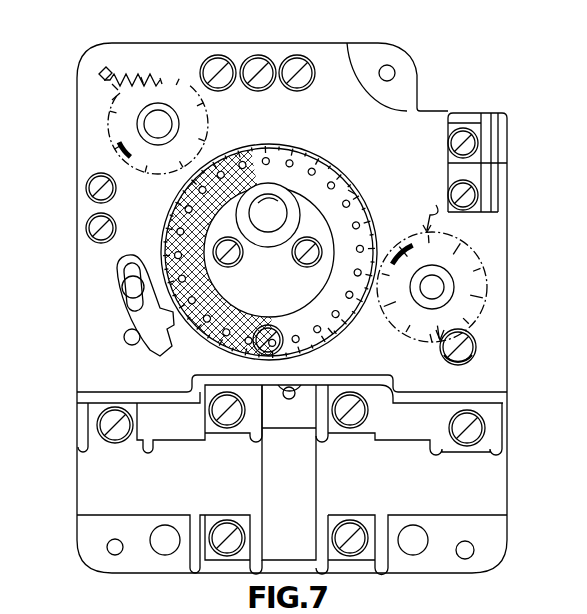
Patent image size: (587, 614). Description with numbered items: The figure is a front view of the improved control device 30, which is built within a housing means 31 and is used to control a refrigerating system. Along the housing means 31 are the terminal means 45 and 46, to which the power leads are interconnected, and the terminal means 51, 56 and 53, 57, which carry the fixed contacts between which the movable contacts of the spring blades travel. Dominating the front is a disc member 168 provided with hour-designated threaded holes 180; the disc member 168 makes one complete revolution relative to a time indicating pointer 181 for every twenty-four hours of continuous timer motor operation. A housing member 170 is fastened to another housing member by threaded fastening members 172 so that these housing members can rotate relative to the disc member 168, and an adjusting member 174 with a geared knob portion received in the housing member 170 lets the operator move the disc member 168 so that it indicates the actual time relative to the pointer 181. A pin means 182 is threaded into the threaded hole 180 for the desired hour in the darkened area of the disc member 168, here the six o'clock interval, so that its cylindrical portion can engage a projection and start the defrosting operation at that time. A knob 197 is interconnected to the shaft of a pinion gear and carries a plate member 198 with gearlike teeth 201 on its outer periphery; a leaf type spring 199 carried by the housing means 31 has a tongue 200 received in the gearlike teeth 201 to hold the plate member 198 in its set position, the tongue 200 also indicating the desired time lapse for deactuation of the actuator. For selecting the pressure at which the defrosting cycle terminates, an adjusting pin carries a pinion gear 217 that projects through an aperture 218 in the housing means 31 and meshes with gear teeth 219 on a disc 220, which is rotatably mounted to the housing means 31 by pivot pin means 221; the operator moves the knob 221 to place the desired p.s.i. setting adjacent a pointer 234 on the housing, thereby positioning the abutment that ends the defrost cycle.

The control device 30 is at (292, 290).
The housing means 31 is at (466, 148).
The terminal means 45 is at (499, 428).
The terminal means 46 is at (81, 428).
The terminal means 51 is at (377, 398).
The terminal means 53 is at (218, 430).
The terminal means 56 is at (351, 564).
The terminal means 57 is at (220, 562).
The disc member 168 is at (274, 252).
The housing member 170 is at (359, 339).
The threaded fastening members 172 is at (268, 236).
The adjusting member 174 is at (165, 123).
The threaded holes 180 is at (381, 185).
The time indicating pointer 181 is at (159, 310).
The pin means 182 is at (296, 352).
The knob 197 is at (181, 125).
The plate member 198 is at (184, 54).
The leaf type spring 199 is at (132, 68).
The tongue 200 is at (77, 94).
The gearlike teeth 201 is at (78, 109).
The pinion gear 217 is at (499, 343).
The aperture 218 is at (472, 370).
The gear teeth 219 is at (419, 344).
The disc 220 is at (468, 287).
The pivot pin means 221 is at (449, 264).
The pointer 234 is at (423, 211).